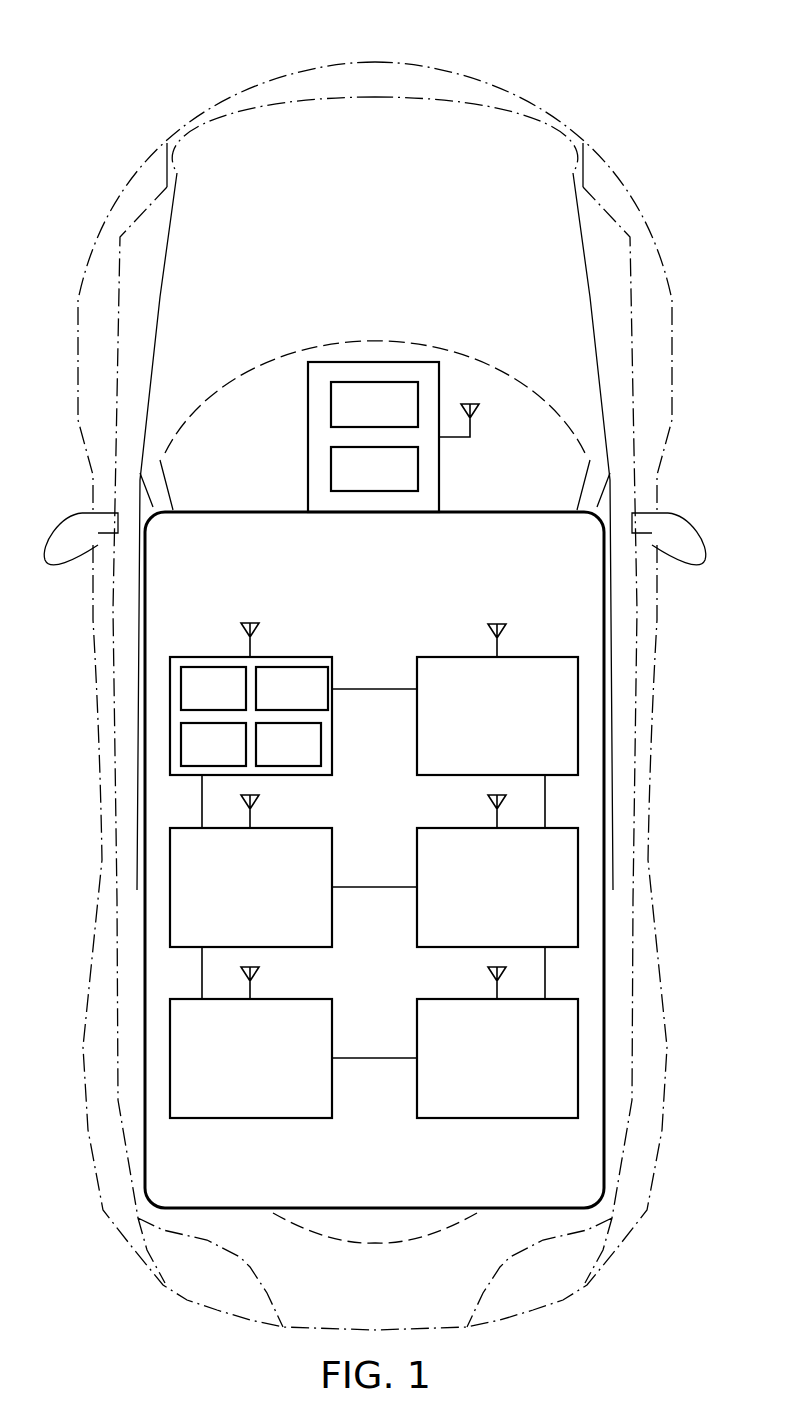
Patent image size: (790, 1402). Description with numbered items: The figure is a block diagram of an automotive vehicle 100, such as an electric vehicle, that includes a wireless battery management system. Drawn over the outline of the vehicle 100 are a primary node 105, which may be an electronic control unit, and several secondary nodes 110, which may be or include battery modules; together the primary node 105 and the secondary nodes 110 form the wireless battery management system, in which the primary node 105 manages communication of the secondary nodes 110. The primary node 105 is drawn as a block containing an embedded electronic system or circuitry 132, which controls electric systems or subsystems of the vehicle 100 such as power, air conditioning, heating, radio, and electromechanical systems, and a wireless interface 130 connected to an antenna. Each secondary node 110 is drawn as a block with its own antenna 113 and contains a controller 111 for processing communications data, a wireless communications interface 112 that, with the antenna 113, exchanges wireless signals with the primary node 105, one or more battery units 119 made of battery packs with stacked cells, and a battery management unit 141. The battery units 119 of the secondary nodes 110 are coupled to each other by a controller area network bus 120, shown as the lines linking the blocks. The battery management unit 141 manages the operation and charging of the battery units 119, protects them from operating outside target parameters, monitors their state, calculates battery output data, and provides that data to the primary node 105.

The automotive vehicle 100 is at (215, 78).
The primary node 105 is at (333, 437).
The embedded electronic system or circuitry 132 is at (396, 418).
The wireless interface 130 is at (374, 469).
The antenna 113 is at (477, 408).
The secondary node 110 is at (251, 681).
The wireless communications interface 112 is at (234, 702).
The battery unit 119 is at (312, 702).
The controller 111 is at (234, 757).
The battery management unit 141 is at (309, 757).
The controller area network (CAN) bus 120 is at (380, 688).